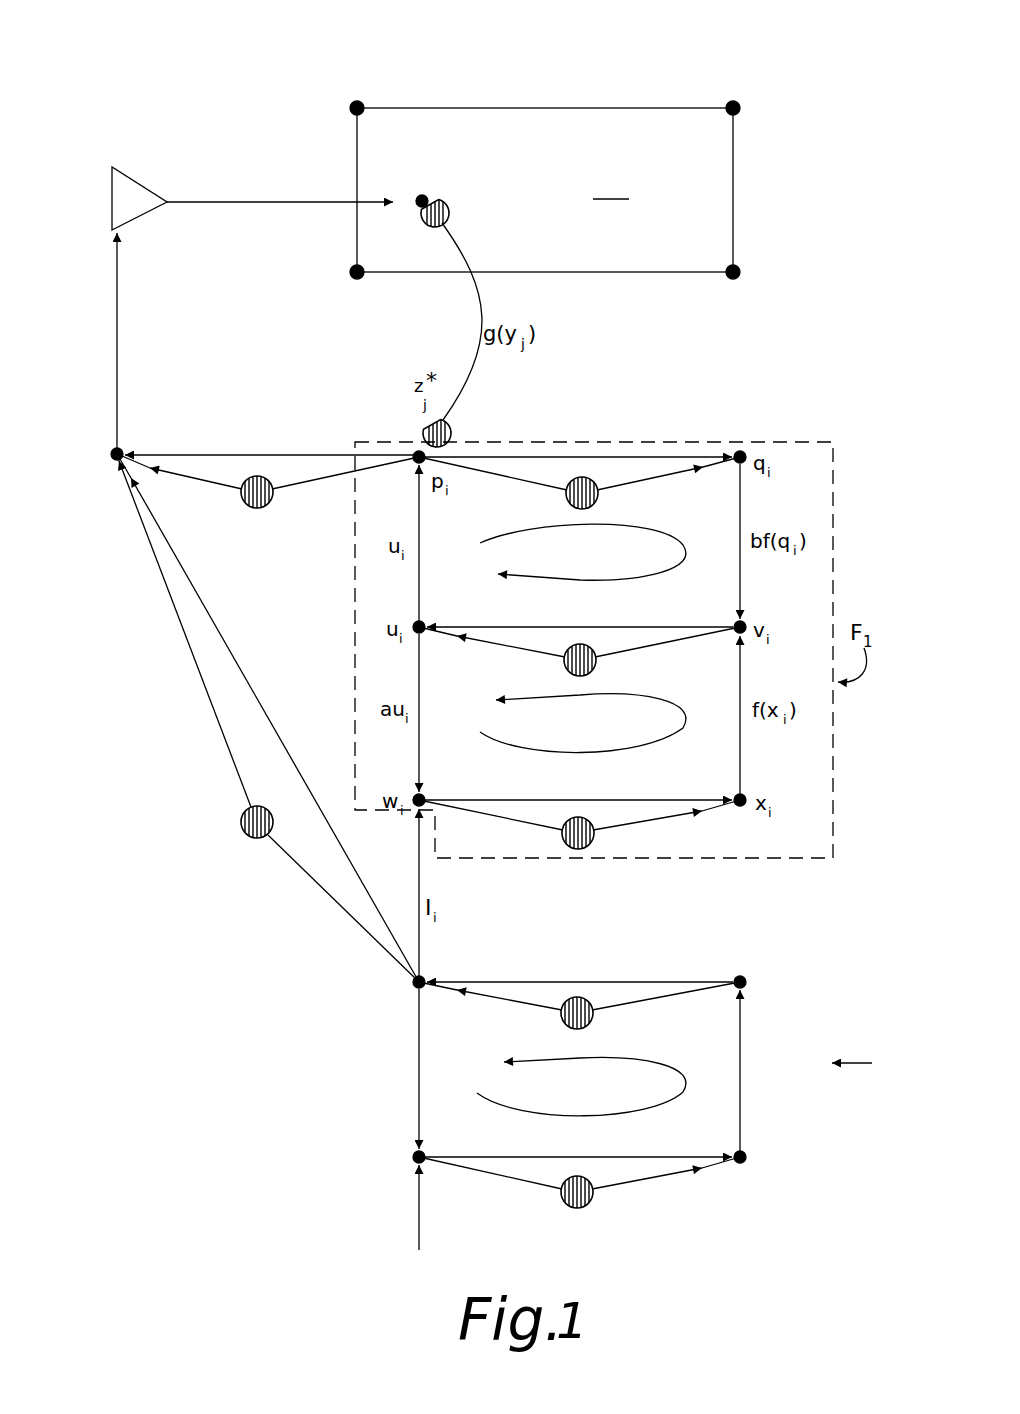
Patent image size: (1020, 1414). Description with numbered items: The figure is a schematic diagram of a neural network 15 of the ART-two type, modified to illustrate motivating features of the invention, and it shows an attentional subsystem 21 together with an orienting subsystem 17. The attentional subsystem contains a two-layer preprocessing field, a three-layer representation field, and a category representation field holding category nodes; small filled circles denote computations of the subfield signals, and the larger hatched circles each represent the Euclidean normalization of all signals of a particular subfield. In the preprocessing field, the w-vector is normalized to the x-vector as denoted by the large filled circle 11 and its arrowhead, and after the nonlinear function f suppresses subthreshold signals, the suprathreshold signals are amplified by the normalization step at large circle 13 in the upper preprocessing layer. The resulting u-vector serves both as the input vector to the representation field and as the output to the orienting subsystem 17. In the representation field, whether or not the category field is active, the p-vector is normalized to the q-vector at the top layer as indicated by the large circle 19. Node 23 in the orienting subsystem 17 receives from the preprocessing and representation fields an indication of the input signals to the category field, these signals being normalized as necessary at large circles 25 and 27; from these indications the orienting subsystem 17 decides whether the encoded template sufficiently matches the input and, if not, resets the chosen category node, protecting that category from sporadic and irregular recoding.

The large filled circle 11 is at (590, 1201).
The large circle 13 is at (590, 1022).
The neural network 15 is at (228, 1052).
The orienting subsystem 17 is at (104, 140).
The large circle 19 is at (586, 478).
The attentional subsystem (F2 choice field) 21 is at (768, 106).
The node 23 is at (114, 452).
The large circle 25 is at (270, 504).
The large circle 27 is at (259, 838).